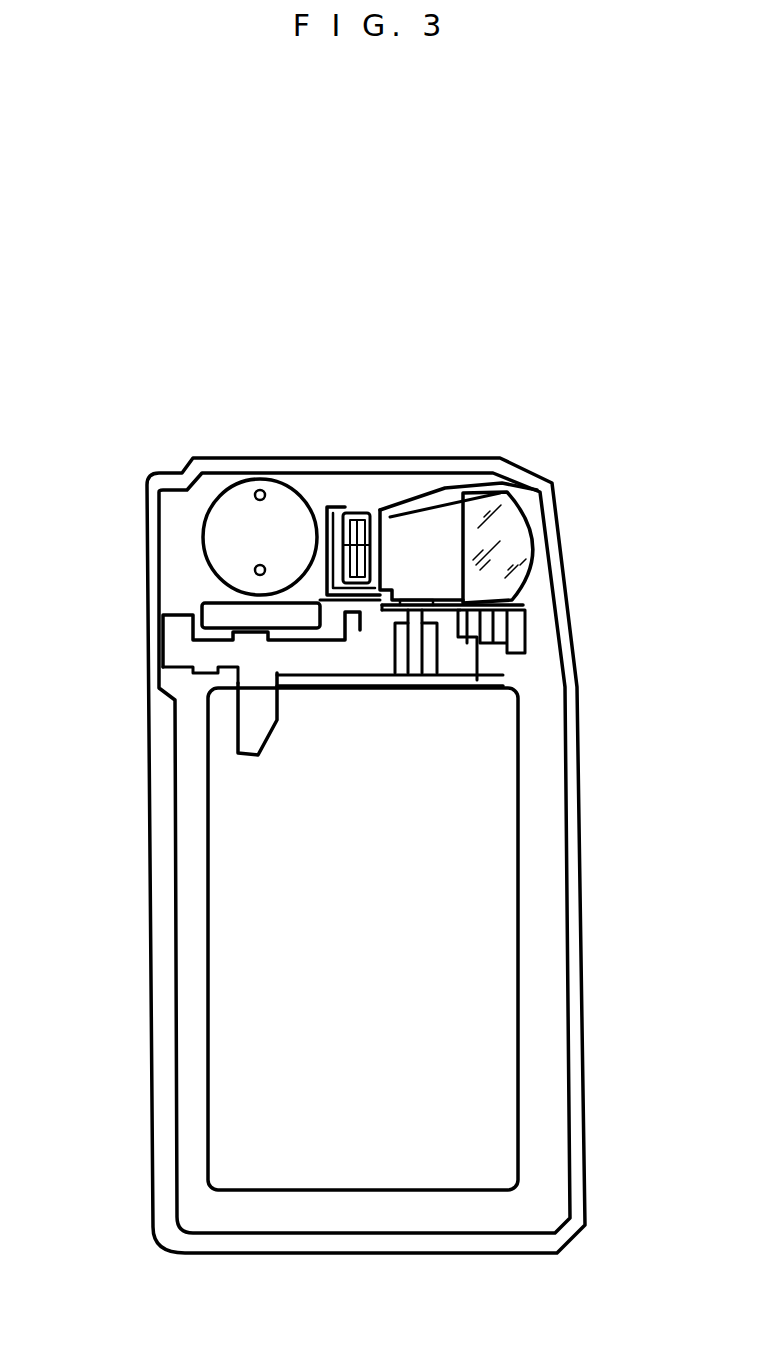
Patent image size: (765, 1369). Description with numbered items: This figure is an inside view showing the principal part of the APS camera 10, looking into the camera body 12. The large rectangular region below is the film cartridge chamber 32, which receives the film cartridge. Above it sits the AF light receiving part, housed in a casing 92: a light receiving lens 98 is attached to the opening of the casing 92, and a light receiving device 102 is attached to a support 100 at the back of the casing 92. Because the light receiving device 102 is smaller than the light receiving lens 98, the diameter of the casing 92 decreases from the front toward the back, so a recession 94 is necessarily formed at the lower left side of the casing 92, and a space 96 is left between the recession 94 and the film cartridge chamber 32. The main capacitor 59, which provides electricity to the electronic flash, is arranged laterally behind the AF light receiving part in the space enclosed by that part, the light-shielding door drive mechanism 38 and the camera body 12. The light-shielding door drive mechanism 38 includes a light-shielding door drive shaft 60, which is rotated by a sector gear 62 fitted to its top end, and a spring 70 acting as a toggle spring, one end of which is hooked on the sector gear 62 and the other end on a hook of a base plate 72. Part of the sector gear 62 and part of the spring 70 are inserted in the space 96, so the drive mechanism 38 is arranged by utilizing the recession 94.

The APS camera 10 is at (548, 355).
The camera body 12 is at (468, 455).
The film cartridge chamber 32 is at (519, 872).
The light-shielding door drive mechanism 38 is at (193, 564).
The main capacitor 59 is at (212, 510).
The light-shielding door drive shaft 60 is at (257, 728).
The sector gear 62 is at (173, 653).
The spring 70 is at (207, 605).
The base plate 72 is at (365, 647).
The casing 92 is at (418, 490).
The recession 94 is at (333, 598).
The space 96 is at (378, 628).
The light receiving lens 98 is at (533, 537).
The support 100 is at (334, 505).
The light receiving device 102 is at (365, 510).